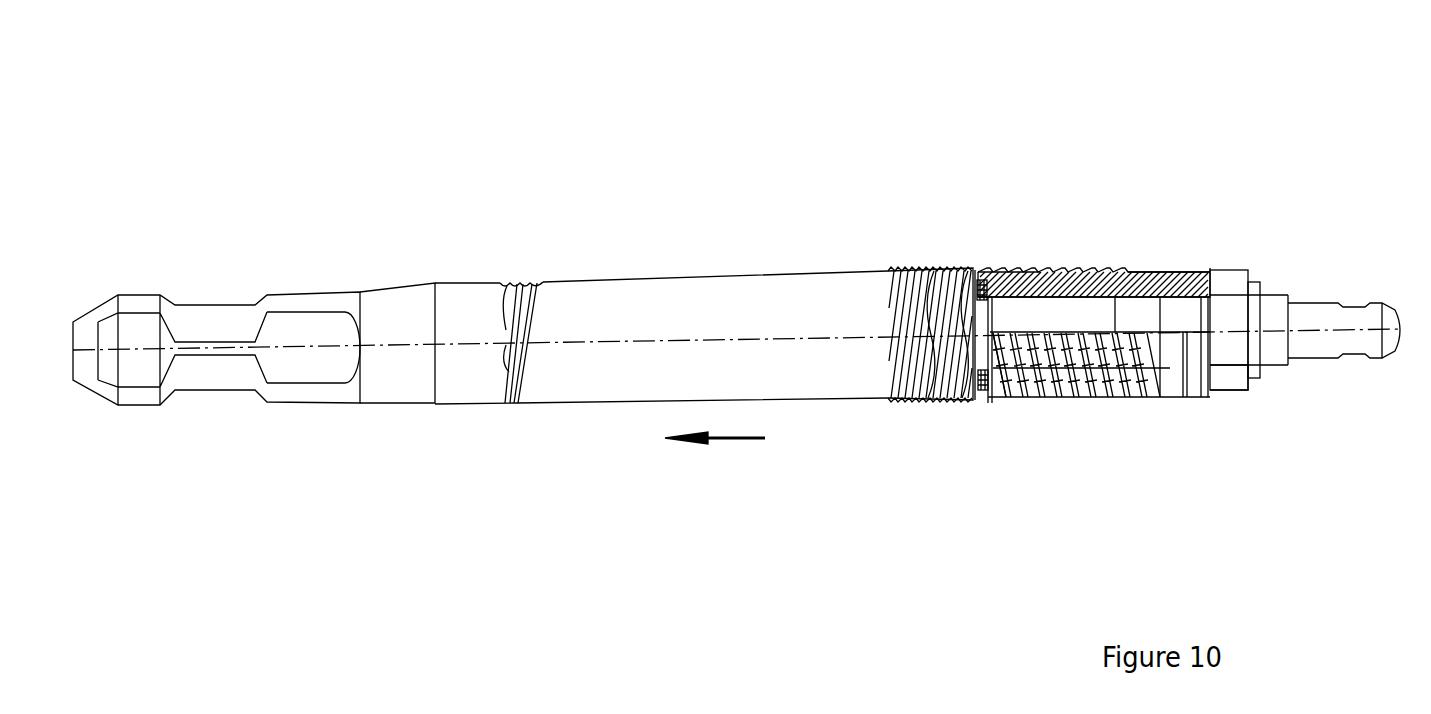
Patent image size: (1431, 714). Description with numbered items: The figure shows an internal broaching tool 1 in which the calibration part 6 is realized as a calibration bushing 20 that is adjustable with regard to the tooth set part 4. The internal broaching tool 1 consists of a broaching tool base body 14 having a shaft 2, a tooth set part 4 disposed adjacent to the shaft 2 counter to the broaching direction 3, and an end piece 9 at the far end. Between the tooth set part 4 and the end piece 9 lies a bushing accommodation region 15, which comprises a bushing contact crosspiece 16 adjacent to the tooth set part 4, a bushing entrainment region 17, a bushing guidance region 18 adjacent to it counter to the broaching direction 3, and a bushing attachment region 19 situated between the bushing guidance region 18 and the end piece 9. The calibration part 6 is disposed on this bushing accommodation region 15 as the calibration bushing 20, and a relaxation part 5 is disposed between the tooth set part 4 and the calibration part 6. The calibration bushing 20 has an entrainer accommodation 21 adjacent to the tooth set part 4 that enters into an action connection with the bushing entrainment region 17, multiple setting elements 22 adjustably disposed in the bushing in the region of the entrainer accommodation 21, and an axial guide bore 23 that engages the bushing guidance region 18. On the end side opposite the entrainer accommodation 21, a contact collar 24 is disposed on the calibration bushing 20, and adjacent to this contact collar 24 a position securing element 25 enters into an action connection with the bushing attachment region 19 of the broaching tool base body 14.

The internal broaching tool 1 is at (1397, 44).
The shaft 2 is at (213, 322).
The broaching direction 3 is at (715, 455).
The tooth set part 4 is at (665, 297).
The relaxation part 5 is at (945, 270).
The calibration part 6 is at (1213, 408).
The end piece 9 is at (1330, 310).
The broaching tool base body 14 is at (463, 312).
The bushing accommodation region 15 is at (1076, 393).
The bushing contact crosspiece 16 is at (977, 272).
The bushing entrainment region 17 is at (1005, 273).
The bushing guidance region 18 is at (1035, 268).
The bushing attachment region 19 is at (1238, 275).
The calibration bushing 20 is at (1168, 273).
The entrainer accommodation 21 is at (979, 383).
The setting elements 22 is at (987, 370).
The guide bore 23 is at (1145, 268).
The contact collar 24 is at (1213, 387).
The position securing element 25 is at (1237, 375).